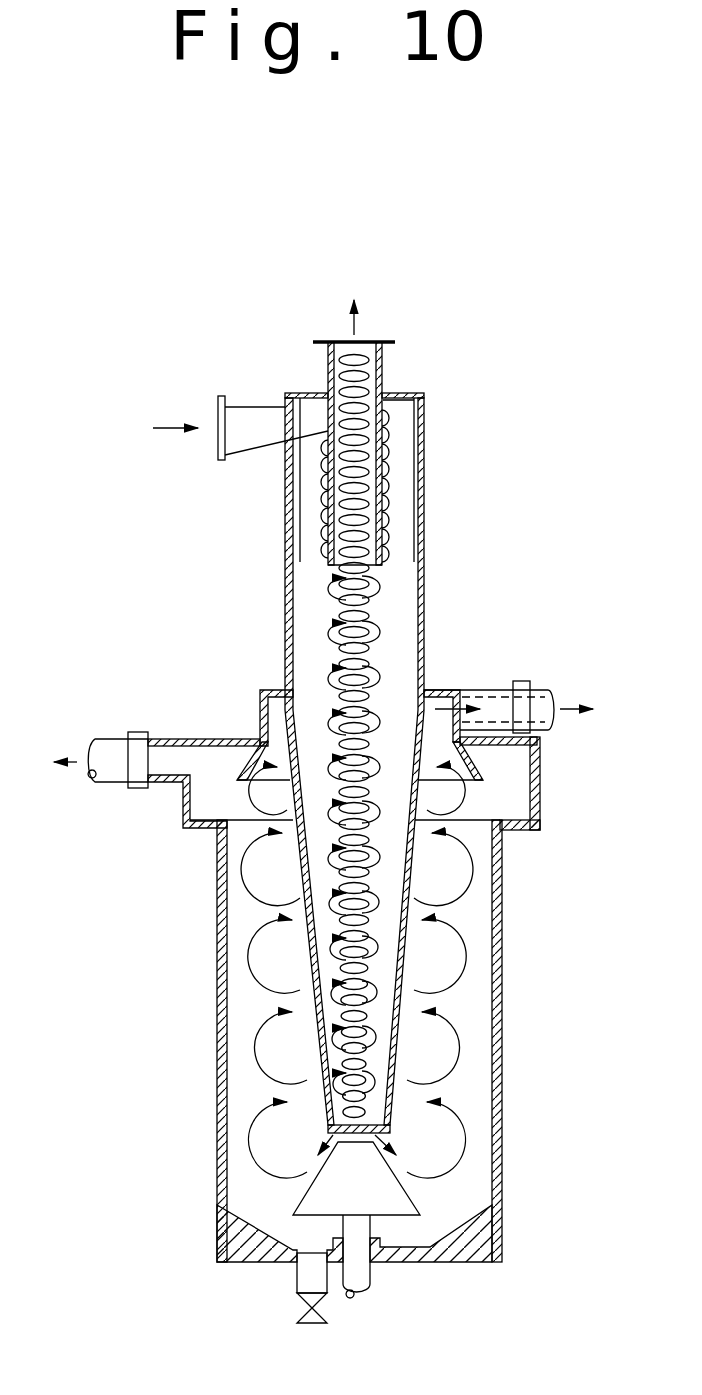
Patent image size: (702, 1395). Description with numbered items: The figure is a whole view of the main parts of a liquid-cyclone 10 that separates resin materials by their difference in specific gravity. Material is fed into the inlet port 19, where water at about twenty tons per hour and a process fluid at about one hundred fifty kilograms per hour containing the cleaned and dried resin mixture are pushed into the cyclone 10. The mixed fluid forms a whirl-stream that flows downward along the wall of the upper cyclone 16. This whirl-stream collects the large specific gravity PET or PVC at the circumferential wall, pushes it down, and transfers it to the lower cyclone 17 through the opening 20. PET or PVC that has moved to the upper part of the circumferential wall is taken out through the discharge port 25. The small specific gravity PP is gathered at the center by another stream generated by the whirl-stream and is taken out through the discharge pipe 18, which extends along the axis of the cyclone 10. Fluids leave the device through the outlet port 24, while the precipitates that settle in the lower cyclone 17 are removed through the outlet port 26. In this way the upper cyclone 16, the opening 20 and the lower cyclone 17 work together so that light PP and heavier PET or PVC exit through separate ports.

The liquid-cyclone 10 is at (148, 373).
The upper cyclone 16 is at (423, 580).
The lower cyclone 17 is at (217, 990).
The discharge pipe 18 is at (388, 507).
The inlet port 19 is at (386, 413).
The opening 20 is at (353, 1135).
The outlet port 24 is at (440, 700).
The discharge port 25 is at (170, 758).
The outlet port 26 is at (310, 1277).